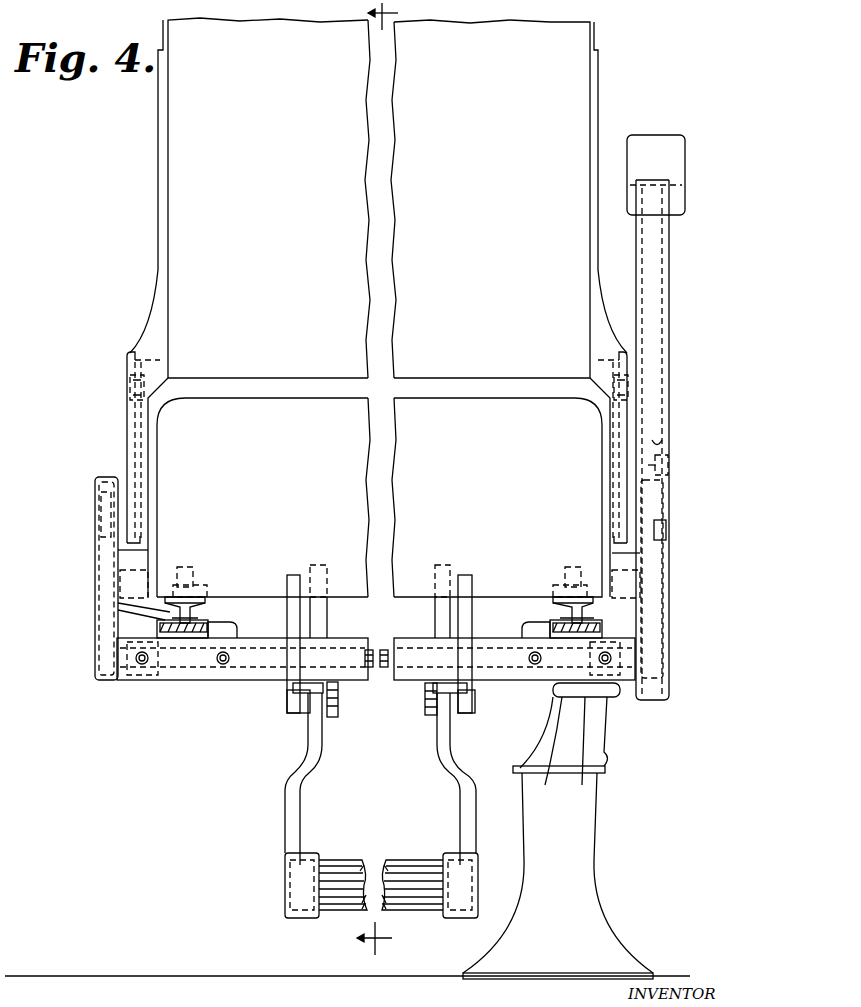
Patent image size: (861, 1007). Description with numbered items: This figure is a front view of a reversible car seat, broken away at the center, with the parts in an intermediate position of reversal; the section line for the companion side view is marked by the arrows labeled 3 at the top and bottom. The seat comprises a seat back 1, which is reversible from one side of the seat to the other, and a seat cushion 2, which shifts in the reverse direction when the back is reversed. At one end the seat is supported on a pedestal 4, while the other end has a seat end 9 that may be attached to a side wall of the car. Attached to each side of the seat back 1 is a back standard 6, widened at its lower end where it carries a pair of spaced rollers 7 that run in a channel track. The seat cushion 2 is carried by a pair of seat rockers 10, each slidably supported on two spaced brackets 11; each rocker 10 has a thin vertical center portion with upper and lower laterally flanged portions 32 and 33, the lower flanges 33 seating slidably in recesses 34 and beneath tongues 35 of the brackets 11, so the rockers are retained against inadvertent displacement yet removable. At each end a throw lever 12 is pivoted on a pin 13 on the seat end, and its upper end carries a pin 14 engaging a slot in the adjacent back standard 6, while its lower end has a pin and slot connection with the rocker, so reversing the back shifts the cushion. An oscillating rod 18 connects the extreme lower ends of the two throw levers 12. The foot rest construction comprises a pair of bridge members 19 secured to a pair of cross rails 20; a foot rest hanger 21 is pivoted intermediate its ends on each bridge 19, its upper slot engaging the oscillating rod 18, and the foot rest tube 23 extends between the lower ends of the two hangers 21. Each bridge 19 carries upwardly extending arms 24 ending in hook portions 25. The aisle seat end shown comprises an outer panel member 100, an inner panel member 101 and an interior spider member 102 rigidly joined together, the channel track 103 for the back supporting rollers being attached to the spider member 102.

The seat back 1 is at (190, 104).
The seat cushion 2 is at (346, 455).
The seat end 3 is at (692, 440).
The pedestal 4 is at (583, 826).
The back standard 6 is at (148, 330).
The rollers 7 is at (105, 522).
The seat end 9 is at (170, 613).
The seat rockers 10 is at (172, 634).
The brackets 11 is at (198, 660).
The throw lever 12 is at (147, 550).
The pin 13 is at (150, 580).
The pin 14 is at (135, 385).
The oscillating rod 18 is at (373, 683).
The bridge members 19 is at (297, 707).
The cross rails 20 is at (257, 675).
The foot rest hanger 21 is at (287, 810).
The foot rest tube 23 is at (396, 870).
The arms 24 is at (290, 620).
The hook portions 25 is at (292, 575).
The upper flanged portions 32 is at (207, 602).
The lower flanged portions 33 is at (200, 622).
The recesses 34 is at (173, 630).
The tongues 35 is at (165, 600).
The outer panel member 100 is at (672, 266).
The inner panel member 101 is at (648, 313).
The spider member 102 is at (664, 466).
The channel track 103 is at (665, 532).